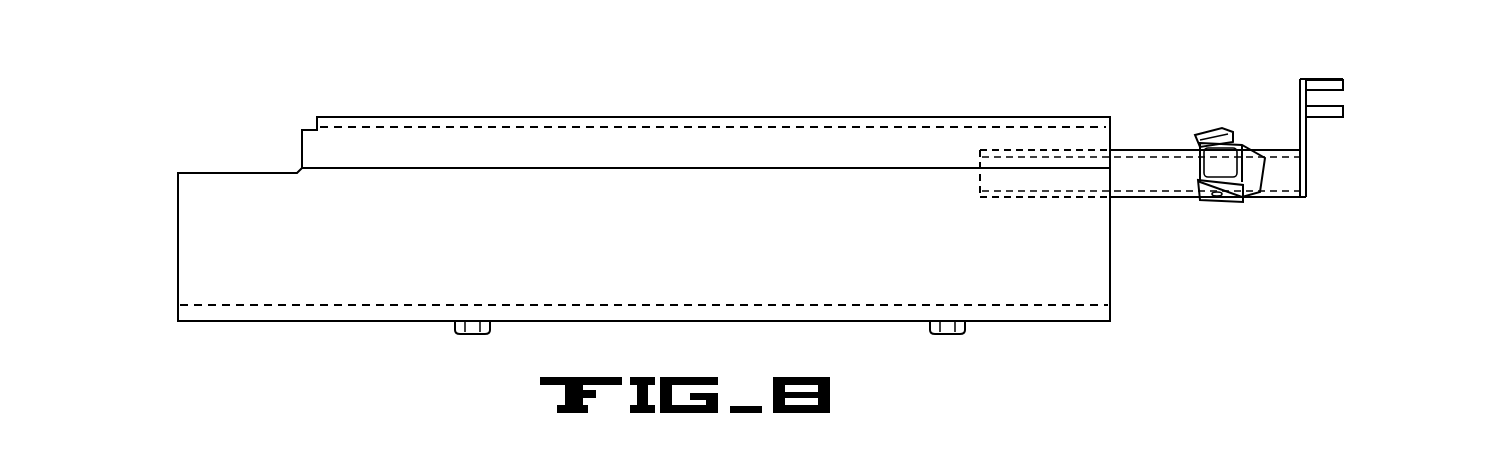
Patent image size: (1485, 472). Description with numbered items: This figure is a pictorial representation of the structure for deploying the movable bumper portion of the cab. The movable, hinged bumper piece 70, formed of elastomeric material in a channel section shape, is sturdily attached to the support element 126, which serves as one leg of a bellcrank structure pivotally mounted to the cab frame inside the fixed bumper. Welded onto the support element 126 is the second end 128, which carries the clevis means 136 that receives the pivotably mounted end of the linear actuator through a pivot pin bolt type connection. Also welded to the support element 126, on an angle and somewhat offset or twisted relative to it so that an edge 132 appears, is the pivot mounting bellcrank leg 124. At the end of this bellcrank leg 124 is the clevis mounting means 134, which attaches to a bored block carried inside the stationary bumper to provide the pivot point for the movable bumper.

The movable hinged bumper piece 70 is at (402, 290).
The bellcrank leg 124 is at (1258, 172).
The support element 126 is at (1147, 187).
The second end of bellcrank structure 128 is at (1300, 103).
The edge 132 is at (1253, 198).
The clevis mounting means 134 is at (1200, 178).
The clevis means 136 is at (1345, 82).